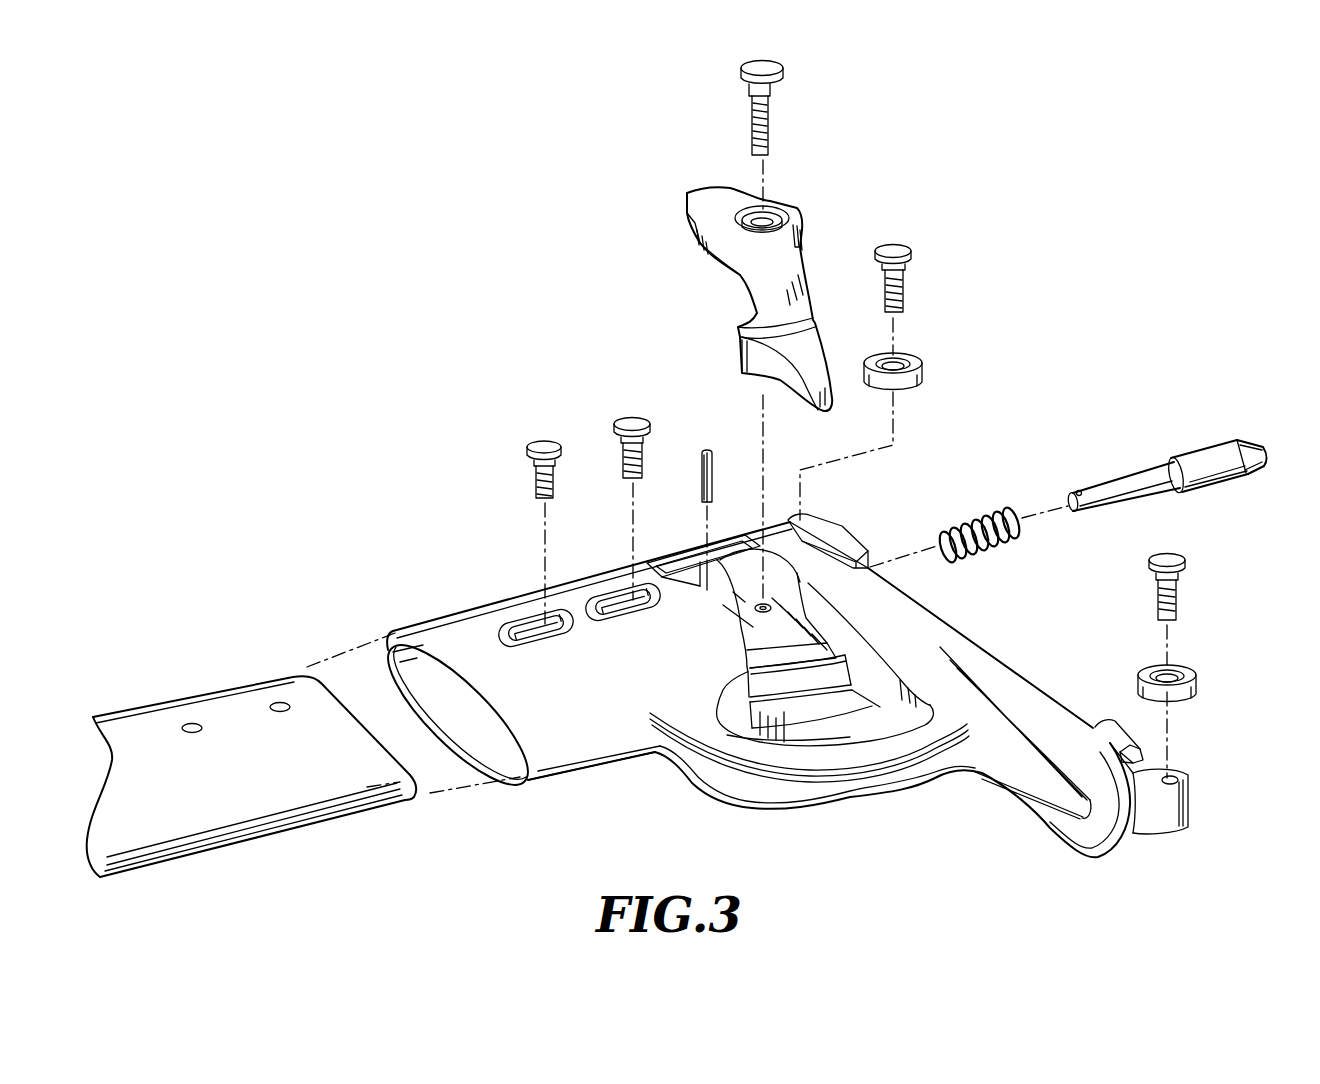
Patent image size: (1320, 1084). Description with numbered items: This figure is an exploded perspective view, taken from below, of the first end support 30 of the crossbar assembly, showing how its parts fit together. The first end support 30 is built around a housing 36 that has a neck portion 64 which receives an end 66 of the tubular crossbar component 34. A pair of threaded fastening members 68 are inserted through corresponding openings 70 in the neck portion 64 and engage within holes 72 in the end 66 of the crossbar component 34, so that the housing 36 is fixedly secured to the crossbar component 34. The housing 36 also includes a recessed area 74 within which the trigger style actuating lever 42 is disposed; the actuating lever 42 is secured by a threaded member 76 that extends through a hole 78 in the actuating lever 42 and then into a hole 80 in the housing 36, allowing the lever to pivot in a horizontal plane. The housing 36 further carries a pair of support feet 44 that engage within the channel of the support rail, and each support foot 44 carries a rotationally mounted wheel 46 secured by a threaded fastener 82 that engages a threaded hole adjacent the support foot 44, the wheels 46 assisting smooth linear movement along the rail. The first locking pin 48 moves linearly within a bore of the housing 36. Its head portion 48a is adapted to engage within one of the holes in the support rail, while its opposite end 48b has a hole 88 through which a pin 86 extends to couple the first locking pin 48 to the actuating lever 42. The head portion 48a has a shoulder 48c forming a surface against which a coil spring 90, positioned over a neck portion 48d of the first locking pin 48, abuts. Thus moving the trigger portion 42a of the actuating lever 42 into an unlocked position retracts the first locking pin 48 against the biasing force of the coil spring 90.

The first end support 30 is at (817, 822).
The crossbar component 34 is at (160, 704).
The housing 36 is at (610, 740).
The actuating lever 42 is at (707, 194).
The trigger portion 42a is at (777, 366).
The support foot 44 is at (847, 533).
The wheel 46 is at (922, 378).
The first locking pin 48 is at (1257, 444).
The head portion 48a is at (1258, 465).
The opposite end 48b is at (1085, 510).
The shoulder 48c is at (1170, 461).
The neck portion 48d is at (1138, 478).
The neck portion 64 is at (568, 748).
The end 66 is at (288, 820).
The threaded fastening members 68 is at (630, 420).
The openings 70 is at (548, 626).
The holes 72 is at (280, 702).
The recessed area 74 is at (850, 733).
The threaded member 76 is at (742, 78).
The hole 78 is at (797, 208).
The hole 80 is at (767, 607).
The threaded fasteners 82 is at (915, 258).
The pin 86 is at (703, 476).
The hole 88 is at (1078, 490).
The coil spring 90 is at (963, 522).